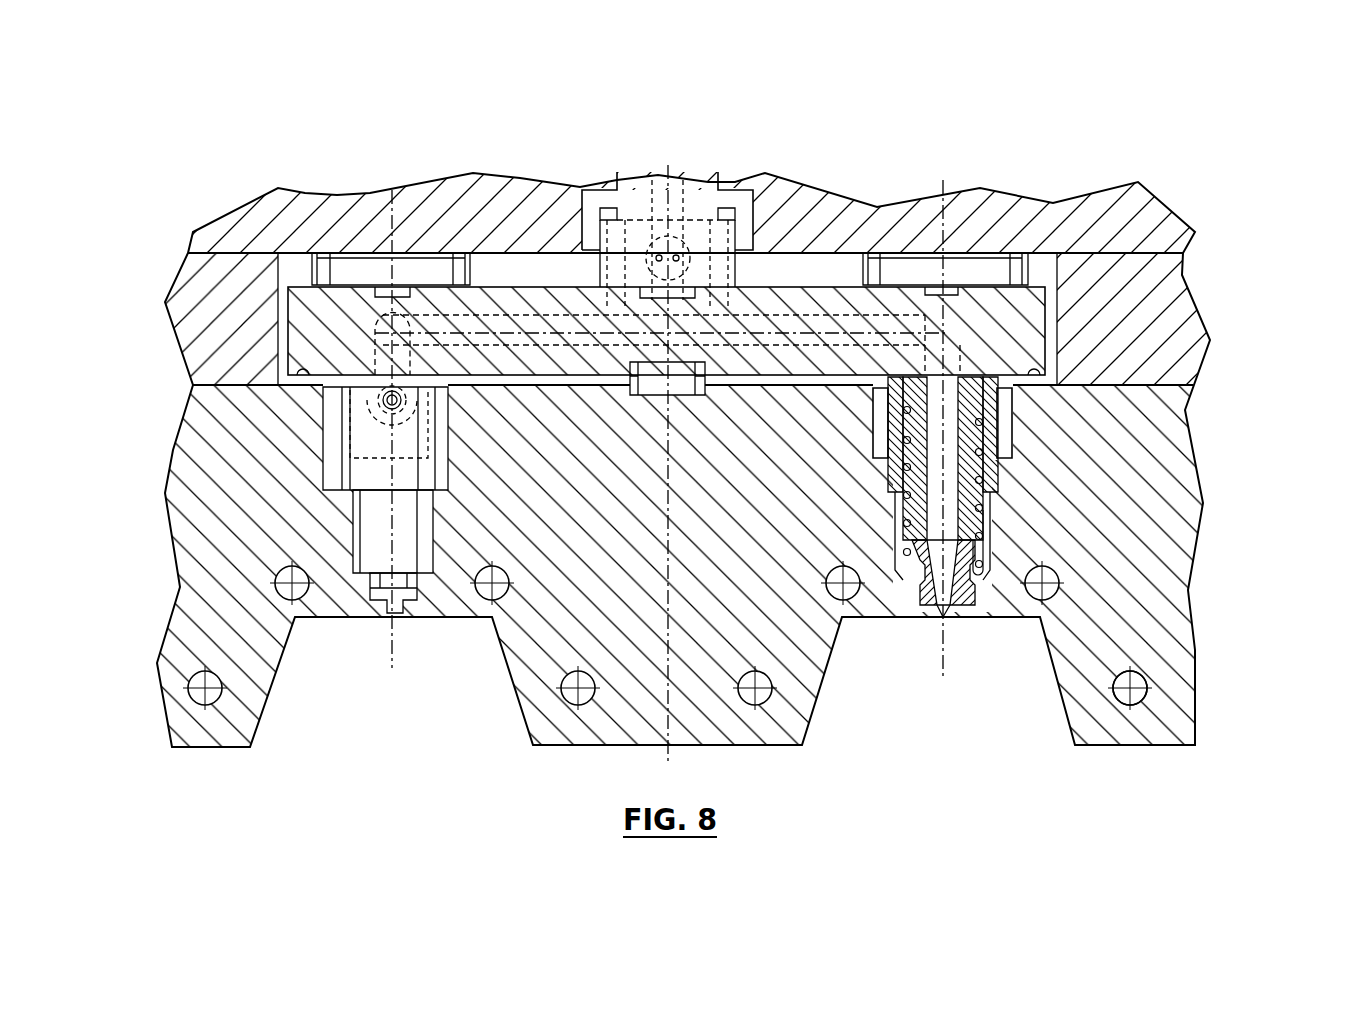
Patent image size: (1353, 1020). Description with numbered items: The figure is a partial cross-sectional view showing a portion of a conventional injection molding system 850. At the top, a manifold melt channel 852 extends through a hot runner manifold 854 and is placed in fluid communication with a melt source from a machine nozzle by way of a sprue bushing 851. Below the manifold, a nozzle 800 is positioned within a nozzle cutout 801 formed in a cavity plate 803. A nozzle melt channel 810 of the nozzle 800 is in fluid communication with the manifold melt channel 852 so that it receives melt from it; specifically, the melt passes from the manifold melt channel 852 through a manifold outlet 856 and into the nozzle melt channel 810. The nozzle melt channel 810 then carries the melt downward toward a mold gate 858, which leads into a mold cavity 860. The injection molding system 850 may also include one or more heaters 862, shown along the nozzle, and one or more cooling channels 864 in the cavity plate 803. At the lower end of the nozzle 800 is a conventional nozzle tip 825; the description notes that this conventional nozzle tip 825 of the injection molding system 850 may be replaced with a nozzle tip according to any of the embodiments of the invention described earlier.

The injection molding system 850 is at (1025, 102).
The sprue bushing 851 is at (697, 192).
The manifold melt channel 852 is at (797, 320).
The hot runner manifold 854 is at (307, 332).
The manifold outlet 856 is at (1008, 386).
The nozzle melt channel 810 is at (947, 445).
The nozzle 800 is at (977, 475).
The cavity plate 803 is at (1178, 498).
The nozzle cutout 801 is at (893, 516).
The heater 862 is at (985, 538).
The nozzle tip 825 is at (965, 602).
The mold cavity 860 is at (920, 697).
The mold gate 858 is at (947, 618).
The cooling channel 864 is at (1195, 686).